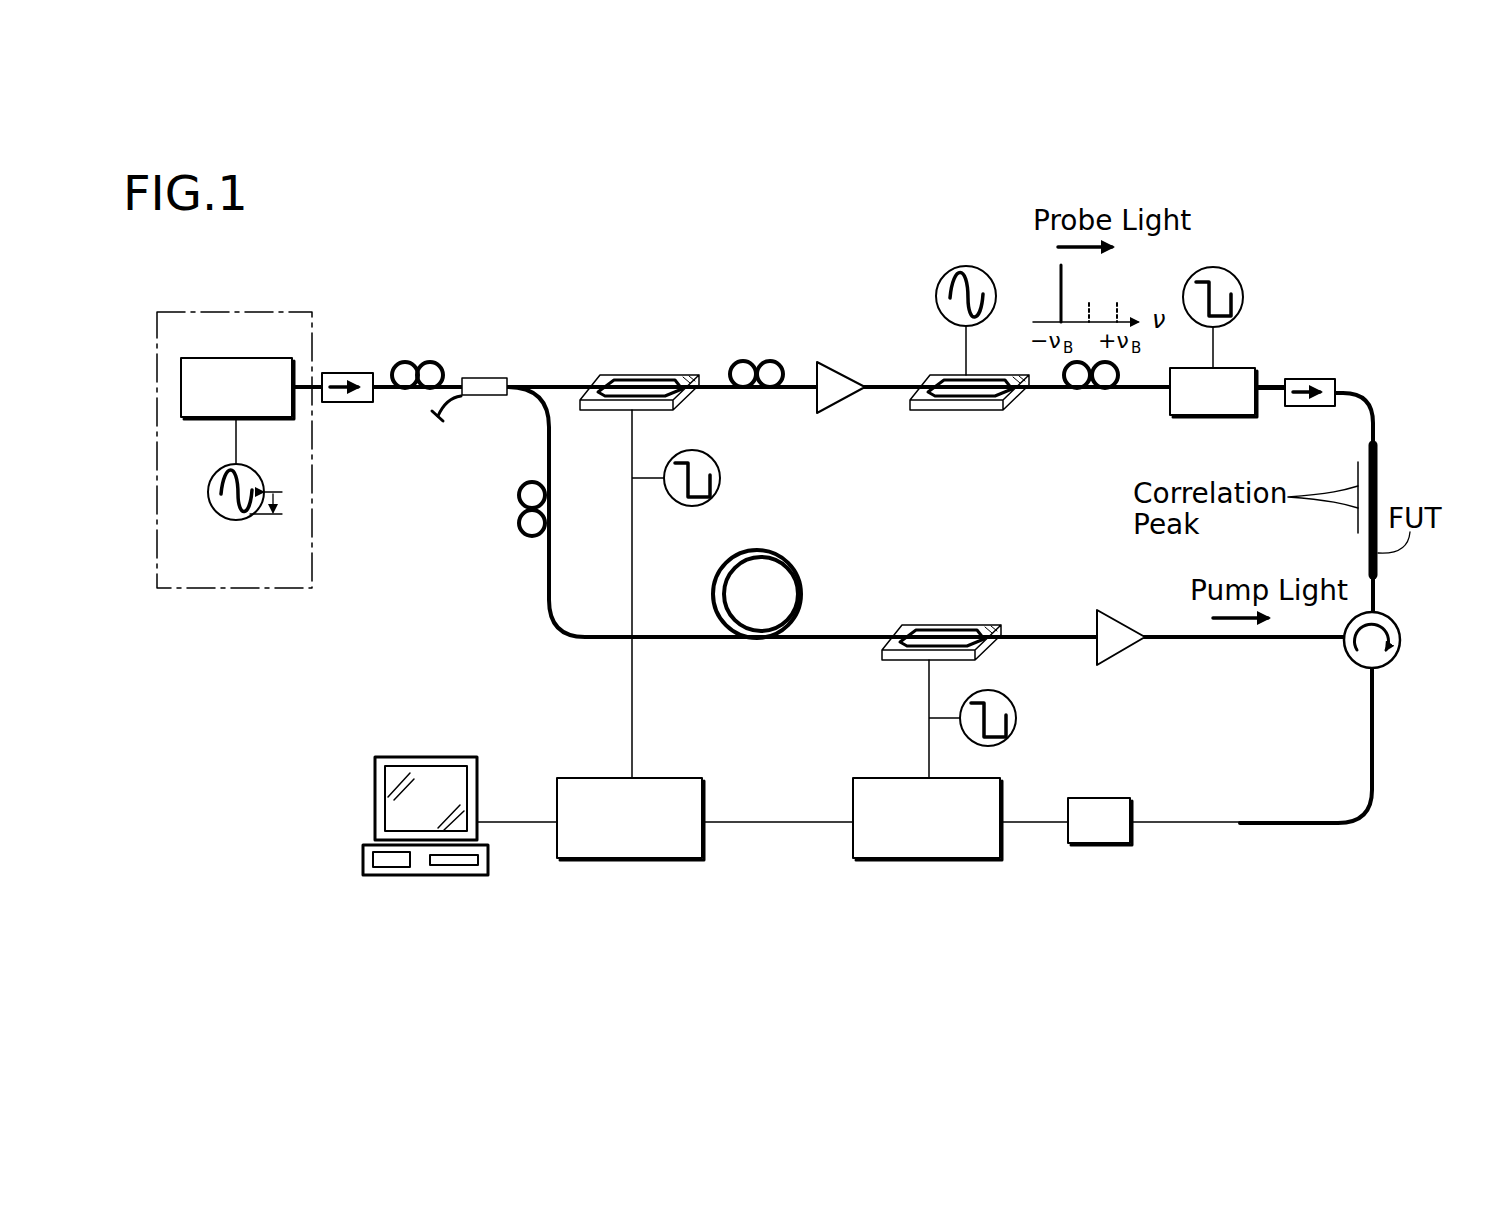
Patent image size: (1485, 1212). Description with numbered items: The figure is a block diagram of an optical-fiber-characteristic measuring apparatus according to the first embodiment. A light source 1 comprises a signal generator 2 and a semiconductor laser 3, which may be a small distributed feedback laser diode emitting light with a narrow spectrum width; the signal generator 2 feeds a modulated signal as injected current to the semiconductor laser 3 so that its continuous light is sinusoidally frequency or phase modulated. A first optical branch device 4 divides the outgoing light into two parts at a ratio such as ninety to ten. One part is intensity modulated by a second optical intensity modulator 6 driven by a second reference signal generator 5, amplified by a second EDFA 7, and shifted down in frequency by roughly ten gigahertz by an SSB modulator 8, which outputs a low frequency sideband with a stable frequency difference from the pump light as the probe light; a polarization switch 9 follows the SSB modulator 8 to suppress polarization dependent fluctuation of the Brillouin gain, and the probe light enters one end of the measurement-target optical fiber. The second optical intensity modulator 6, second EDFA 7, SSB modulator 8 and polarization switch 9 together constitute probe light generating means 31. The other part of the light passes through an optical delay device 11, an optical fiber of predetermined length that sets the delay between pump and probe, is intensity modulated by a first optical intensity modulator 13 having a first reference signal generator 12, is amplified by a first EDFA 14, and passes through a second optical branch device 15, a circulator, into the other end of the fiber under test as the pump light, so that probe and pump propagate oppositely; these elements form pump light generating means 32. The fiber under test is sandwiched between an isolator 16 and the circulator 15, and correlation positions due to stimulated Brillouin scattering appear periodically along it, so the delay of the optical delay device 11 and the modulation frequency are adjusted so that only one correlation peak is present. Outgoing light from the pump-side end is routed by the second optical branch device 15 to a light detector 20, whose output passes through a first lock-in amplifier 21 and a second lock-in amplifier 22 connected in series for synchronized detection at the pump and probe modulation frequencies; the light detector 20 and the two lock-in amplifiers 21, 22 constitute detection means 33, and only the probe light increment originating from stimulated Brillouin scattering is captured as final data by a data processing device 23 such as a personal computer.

The light source 1 is at (282, 312).
The signal generator 2 is at (208, 508).
The semiconductor laser 3 is at (181, 412).
The first optical branch device 4 is at (478, 397).
The second reference signal generator 5 is at (685, 495).
The second optical intensity modulator 6 is at (612, 378).
The second erbium-doped optical fiber amplifier 7 is at (848, 375).
The single sideband modulator 8 is at (983, 412).
The polarization switch 9 is at (1242, 368).
The optical delay device 11 is at (775, 582).
The first reference signal generator 12 is at (1005, 703).
The first optical intensity modulator 13 is at (947, 622).
The first erbium-doped optical fiber amplifier 14 is at (1125, 648).
The second optical branch device 15 is at (1400, 645).
The isolator 16 is at (1332, 380).
The light detector 20 is at (1105, 845).
The first lock-in amplifier 21 is at (948, 836).
The second lock-in amplifier 22 is at (650, 836).
The data processing device 23 is at (377, 798).
The probe light generating means 31 is at (740, 325).
The pump light generating means 32 is at (951, 580).
The detection means 33 is at (908, 880).